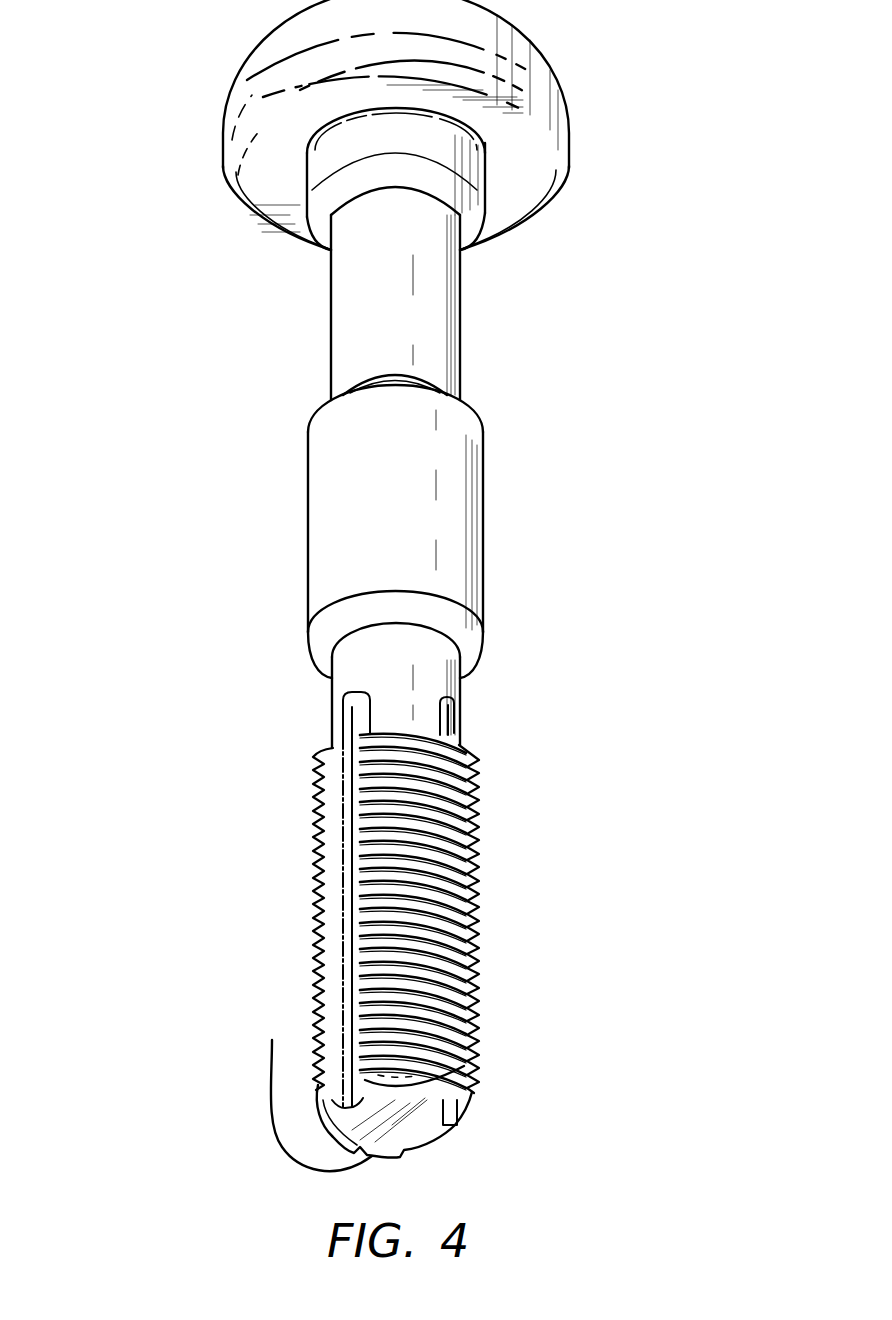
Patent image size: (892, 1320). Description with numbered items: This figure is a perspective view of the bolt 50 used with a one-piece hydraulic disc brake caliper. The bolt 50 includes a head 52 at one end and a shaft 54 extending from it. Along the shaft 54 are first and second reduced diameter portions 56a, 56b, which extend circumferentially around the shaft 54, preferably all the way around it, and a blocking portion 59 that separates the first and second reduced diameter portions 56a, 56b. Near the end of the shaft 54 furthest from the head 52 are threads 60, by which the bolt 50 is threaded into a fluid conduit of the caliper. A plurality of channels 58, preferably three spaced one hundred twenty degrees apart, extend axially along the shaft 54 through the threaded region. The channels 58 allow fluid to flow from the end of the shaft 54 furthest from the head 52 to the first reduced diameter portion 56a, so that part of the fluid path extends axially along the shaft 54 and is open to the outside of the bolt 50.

The bolt 50 is at (110, 280).
The head 52 is at (545, 93).
The shaft 54 is at (430, 1132).
The first reduced diameter portion 56a is at (452, 680).
The second reduced diameter portion 56b is at (453, 303).
The channels 58 is at (343, 1062).
The blocking portion 59 is at (470, 510).
The threads 60 is at (457, 867).